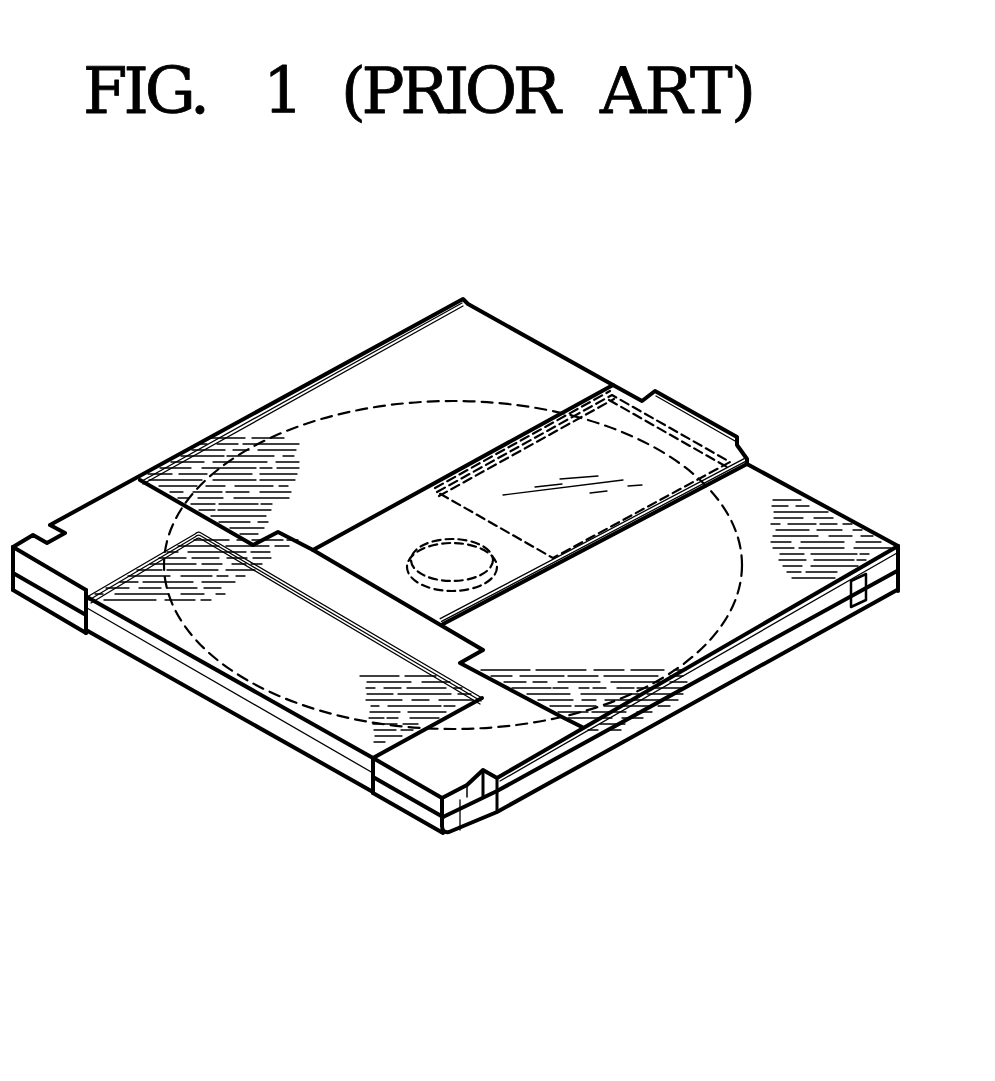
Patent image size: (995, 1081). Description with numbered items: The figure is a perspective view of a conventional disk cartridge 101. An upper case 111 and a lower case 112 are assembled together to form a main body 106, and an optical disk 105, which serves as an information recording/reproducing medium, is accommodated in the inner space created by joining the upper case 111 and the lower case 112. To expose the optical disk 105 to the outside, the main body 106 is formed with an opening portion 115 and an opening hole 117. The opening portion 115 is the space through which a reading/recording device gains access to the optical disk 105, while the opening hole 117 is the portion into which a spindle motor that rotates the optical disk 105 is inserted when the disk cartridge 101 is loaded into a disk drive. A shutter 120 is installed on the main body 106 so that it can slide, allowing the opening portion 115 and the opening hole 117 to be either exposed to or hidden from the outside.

The disk cartridge 101 is at (248, 800).
The optical disk 105 is at (287, 432).
The main body 106 is at (708, 798).
The upper case 111 is at (597, 731).
The lower case 112 is at (575, 768).
The opening portion 115 is at (560, 424).
The opening hole 117 is at (430, 543).
The shutter 120 is at (717, 425).